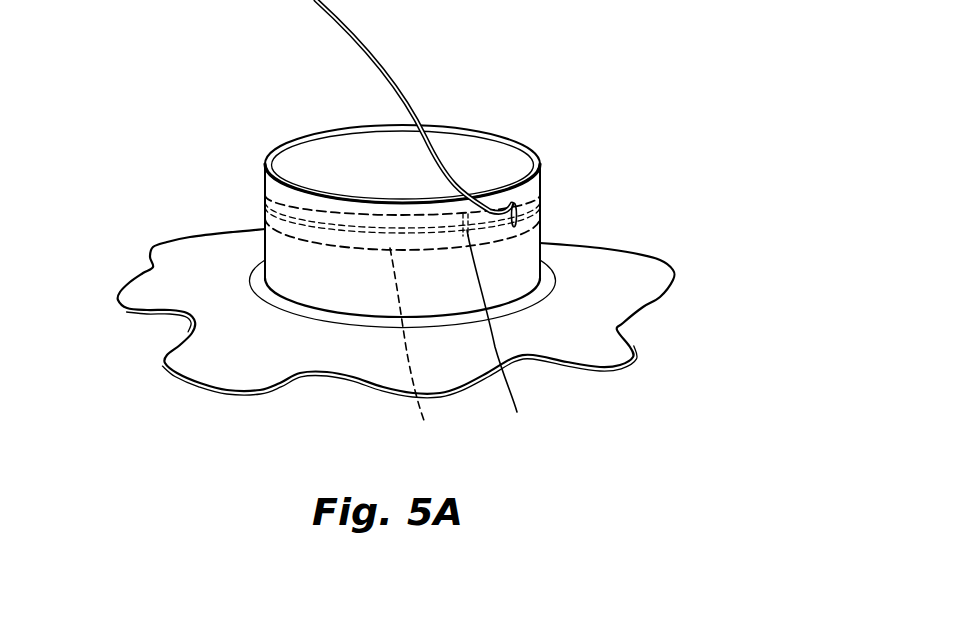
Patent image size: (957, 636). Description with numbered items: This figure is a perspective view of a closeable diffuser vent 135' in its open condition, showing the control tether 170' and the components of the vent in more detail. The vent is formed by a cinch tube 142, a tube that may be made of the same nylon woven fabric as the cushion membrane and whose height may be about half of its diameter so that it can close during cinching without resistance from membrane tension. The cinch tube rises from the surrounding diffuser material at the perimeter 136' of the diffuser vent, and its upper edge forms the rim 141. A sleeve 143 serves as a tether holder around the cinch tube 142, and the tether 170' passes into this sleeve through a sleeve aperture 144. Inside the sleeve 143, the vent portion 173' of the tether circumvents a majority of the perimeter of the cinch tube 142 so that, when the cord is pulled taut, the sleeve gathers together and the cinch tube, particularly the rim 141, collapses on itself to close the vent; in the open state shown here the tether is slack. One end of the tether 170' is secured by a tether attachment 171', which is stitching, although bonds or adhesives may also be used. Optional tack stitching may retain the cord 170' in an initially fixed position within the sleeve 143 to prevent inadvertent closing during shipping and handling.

The closeable diffuser vent 135' is at (372, 99).
The control tether 170' is at (419, 106).
The rim of cinch tube 141 is at (543, 175).
The sleeve aperture 144 is at (518, 222).
The vent portion of tether 173' is at (353, 217).
The cinch tube 142 is at (278, 266).
The perimeter of diffuser vent 136' is at (435, 313).
The sleeve 143 is at (426, 347).
The tether attachment 171' is at (510, 328).